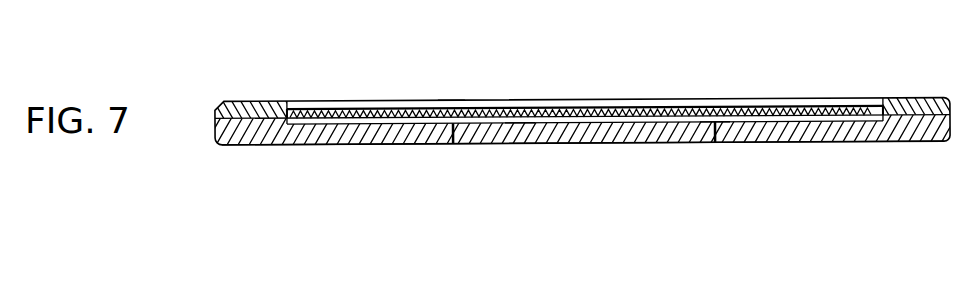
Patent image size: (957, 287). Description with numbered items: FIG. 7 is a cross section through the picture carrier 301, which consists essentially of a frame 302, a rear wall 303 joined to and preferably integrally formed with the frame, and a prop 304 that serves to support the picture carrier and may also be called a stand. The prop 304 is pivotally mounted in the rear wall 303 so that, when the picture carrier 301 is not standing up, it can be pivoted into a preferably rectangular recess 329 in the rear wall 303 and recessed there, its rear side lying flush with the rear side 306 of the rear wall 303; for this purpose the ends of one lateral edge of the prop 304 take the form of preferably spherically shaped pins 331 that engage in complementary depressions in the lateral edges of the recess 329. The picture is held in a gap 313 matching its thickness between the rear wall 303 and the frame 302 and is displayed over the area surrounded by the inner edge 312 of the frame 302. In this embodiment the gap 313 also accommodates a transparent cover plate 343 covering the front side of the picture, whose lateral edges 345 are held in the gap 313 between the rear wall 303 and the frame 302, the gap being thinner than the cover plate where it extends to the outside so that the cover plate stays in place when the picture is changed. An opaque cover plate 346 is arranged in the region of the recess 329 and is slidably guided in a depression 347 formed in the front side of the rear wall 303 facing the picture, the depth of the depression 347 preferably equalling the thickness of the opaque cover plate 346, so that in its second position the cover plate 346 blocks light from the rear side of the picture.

The picture carrier 301 is at (404, 70).
The frame 302 is at (251, 100).
The rear wall 303 is at (305, 151).
The prop 304 is at (605, 150).
The rear side of the rear wall 306 is at (264, 148).
The inner edge of the frame 312 is at (305, 107).
The gap 313 is at (768, 114).
The recess 329 is at (713, 122).
The pins 331 is at (453, 145).
The transparent cover plate 343 is at (450, 99).
The lateral edges of the transparent cover plate 345 is at (290, 106).
The opaque cover plate 346 is at (519, 125).
The depression 347 is at (550, 120).